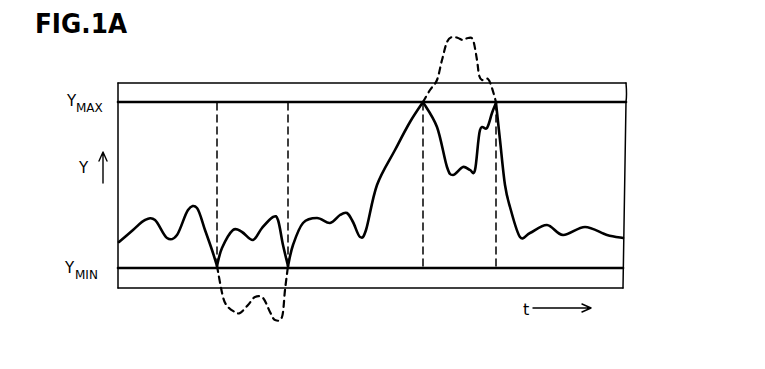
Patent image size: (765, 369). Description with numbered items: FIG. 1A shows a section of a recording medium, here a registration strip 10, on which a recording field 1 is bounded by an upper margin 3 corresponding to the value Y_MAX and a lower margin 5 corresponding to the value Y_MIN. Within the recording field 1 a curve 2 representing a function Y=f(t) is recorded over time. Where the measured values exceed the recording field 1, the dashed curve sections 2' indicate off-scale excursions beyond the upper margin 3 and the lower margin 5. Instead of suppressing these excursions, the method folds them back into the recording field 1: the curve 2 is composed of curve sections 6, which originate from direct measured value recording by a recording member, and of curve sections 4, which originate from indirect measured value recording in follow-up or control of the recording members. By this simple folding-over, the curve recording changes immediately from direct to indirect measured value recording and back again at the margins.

The recording field 1 is at (636, 103).
The curve 2 is at (387, 184).
The curve sections 2' is at (358, 177).
The upper margin 3 is at (258, 103).
The curve sections 4 is at (272, 218).
The lower margin 5 is at (382, 269).
The curve sections 6 is at (196, 213).
The registration strip 10 is at (200, 90).